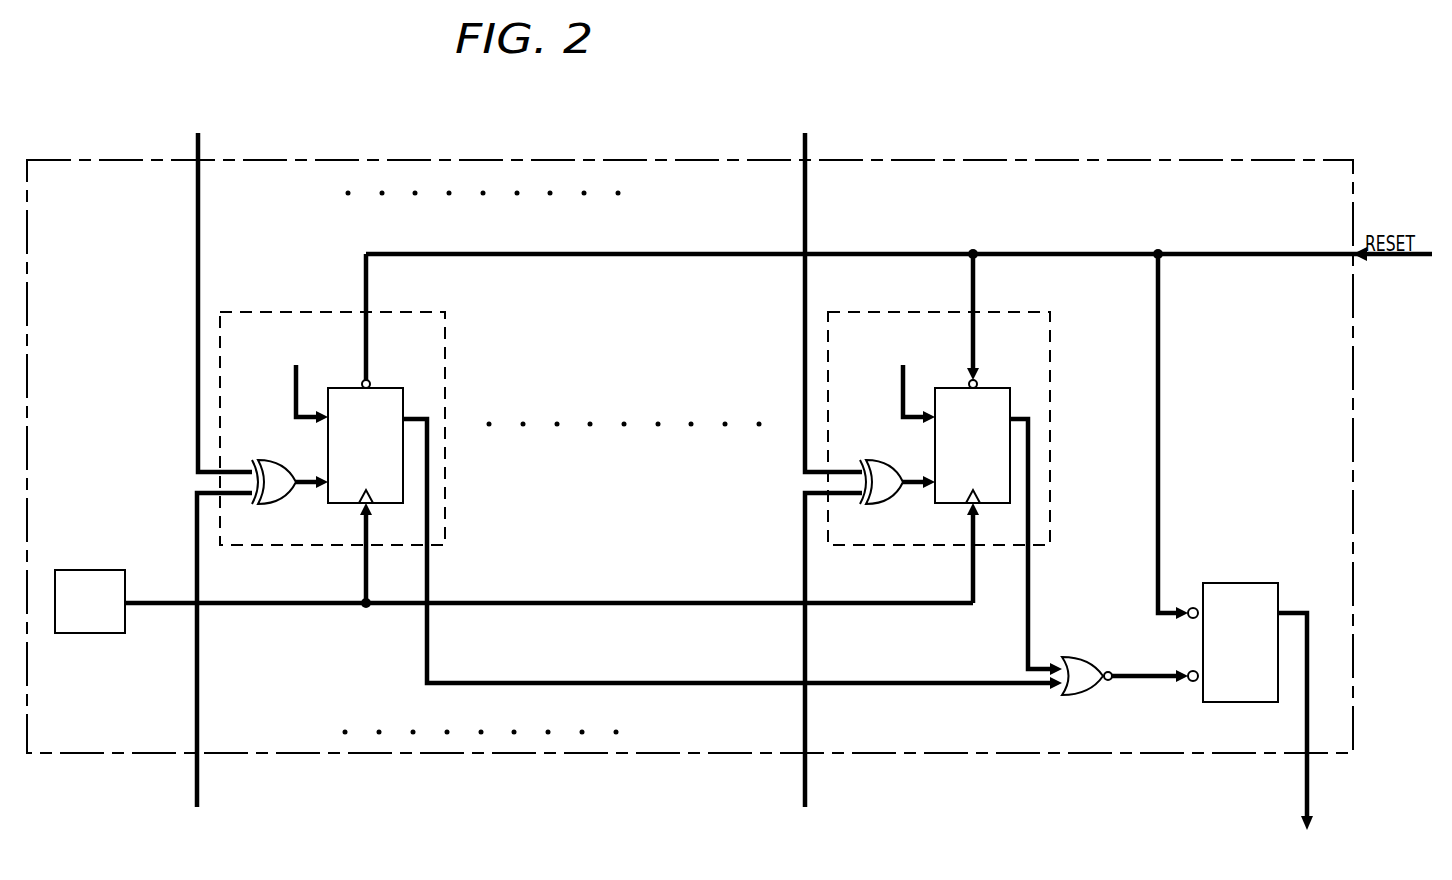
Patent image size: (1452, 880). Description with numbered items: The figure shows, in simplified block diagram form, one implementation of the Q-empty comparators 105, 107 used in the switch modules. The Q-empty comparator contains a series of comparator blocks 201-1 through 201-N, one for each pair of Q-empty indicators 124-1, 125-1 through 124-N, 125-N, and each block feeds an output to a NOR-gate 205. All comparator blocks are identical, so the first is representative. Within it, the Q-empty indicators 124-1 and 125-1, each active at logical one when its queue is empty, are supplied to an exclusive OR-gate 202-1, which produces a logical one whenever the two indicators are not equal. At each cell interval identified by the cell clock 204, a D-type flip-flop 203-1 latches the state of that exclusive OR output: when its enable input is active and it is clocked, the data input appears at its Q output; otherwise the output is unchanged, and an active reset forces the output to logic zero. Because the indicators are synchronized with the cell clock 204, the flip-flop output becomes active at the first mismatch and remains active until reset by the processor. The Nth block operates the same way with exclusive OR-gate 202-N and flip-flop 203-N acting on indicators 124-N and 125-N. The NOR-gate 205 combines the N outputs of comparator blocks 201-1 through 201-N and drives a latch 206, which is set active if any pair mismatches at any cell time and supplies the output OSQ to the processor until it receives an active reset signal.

The Q-empty comparator 105 is at (690, 435).
The Q-empty comparator 107 is at (1200, 160).
The Q-empty indicator 124-1 is at (211, 286).
The Q-empty indicator 124-N is at (821, 286).
The Q-empty indicator 125-1 is at (209, 668).
The Q-empty indicator 125-N is at (819, 668).
The comparator block 201-1 is at (447, 523).
The comparator block 201-N is at (1052, 523).
The exclusive OR-gate 202-1 is at (262, 464).
The exclusive OR-gate 202-N is at (868, 464).
The flip-flop 203-1 is at (384, 387).
The flip-flop 203-N is at (991, 387).
The cell clock 204 is at (101, 570).
The NOR-gate 205 is at (1080, 657).
The latch 206 is at (1229, 583).